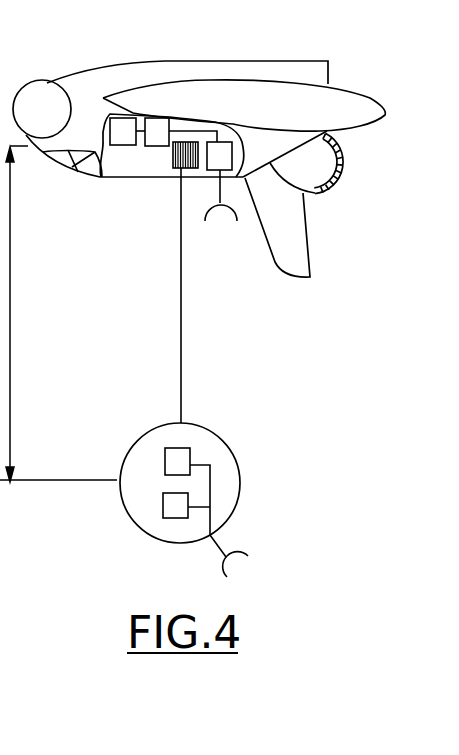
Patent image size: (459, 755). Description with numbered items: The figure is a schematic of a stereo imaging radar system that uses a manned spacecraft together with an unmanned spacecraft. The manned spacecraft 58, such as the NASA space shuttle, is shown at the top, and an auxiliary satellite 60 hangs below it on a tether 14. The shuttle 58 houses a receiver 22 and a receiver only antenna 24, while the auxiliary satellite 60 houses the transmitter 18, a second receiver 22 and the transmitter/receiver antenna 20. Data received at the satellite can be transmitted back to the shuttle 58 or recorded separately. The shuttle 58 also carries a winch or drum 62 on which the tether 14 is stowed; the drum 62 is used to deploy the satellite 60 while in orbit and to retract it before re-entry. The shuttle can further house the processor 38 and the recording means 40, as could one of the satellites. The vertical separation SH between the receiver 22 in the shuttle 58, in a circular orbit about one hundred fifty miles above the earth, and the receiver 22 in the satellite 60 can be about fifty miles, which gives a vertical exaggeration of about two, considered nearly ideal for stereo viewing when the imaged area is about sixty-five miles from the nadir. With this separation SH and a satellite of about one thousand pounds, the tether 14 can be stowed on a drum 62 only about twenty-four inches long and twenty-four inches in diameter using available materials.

The manned spacecraft 58 is at (153, 63).
The recording means 40 is at (120, 146).
The processor 38 is at (154, 147).
The winch or drum 62 is at (174, 166).
The receiver 22 is at (233, 180).
The receiver only antenna 24 is at (206, 222).
The tether 14 is at (181, 342).
The vertical separation SH is at (12, 343).
The auxiliary satellite 60 is at (125, 512).
The transmitter 18 is at (175, 518).
The transmitter/receiver antenna 20 is at (249, 555).